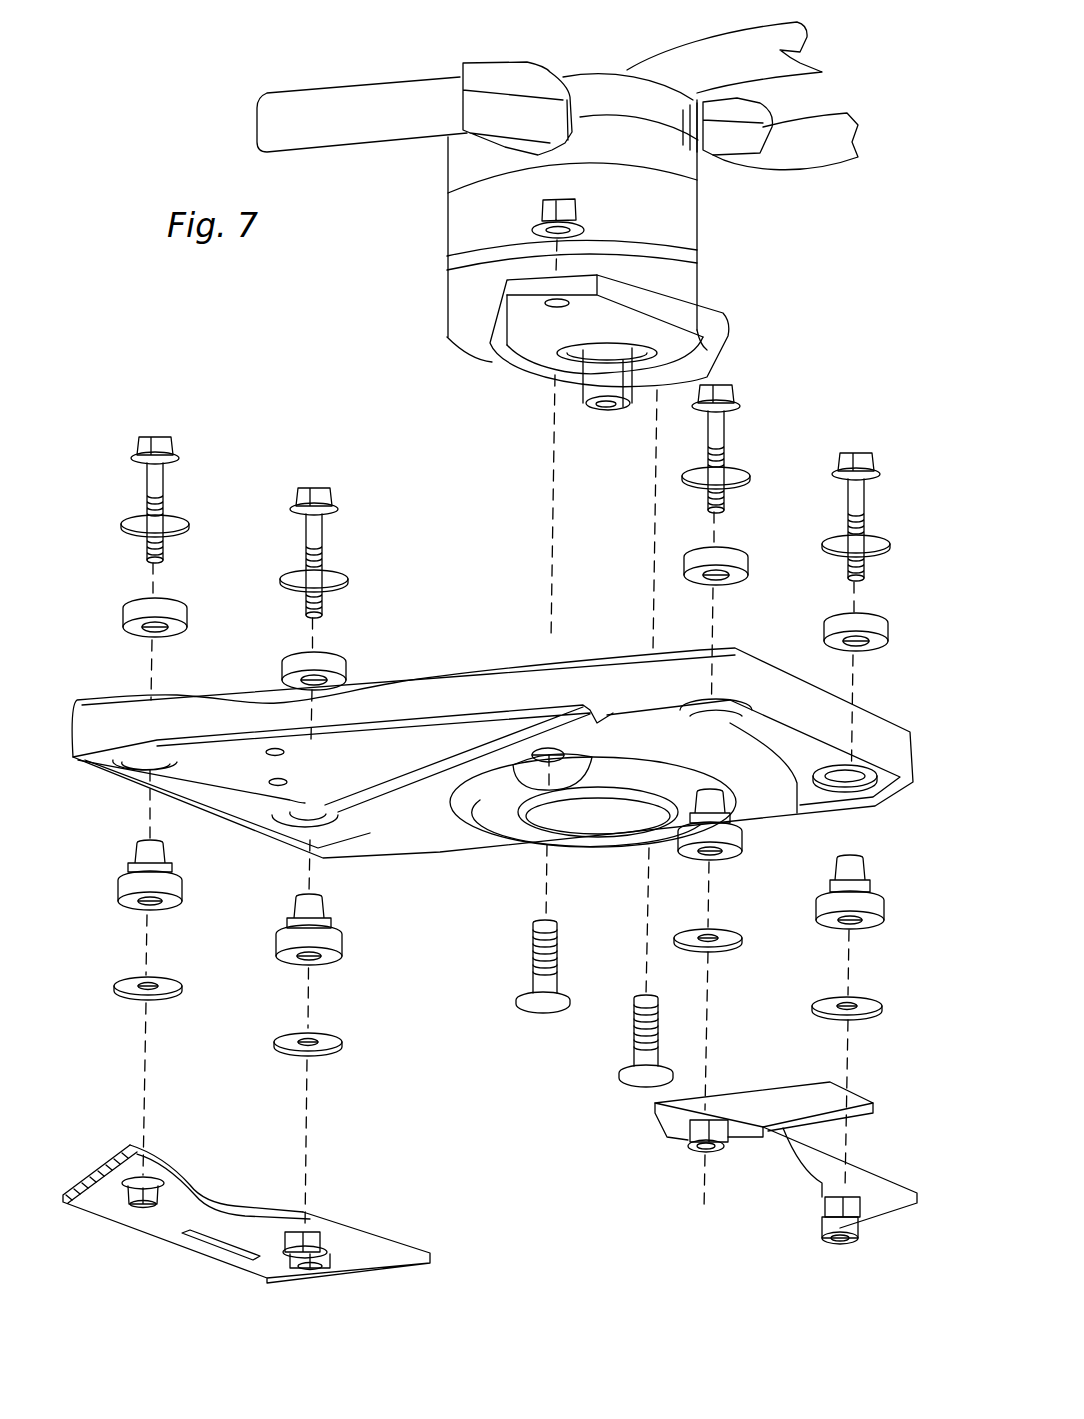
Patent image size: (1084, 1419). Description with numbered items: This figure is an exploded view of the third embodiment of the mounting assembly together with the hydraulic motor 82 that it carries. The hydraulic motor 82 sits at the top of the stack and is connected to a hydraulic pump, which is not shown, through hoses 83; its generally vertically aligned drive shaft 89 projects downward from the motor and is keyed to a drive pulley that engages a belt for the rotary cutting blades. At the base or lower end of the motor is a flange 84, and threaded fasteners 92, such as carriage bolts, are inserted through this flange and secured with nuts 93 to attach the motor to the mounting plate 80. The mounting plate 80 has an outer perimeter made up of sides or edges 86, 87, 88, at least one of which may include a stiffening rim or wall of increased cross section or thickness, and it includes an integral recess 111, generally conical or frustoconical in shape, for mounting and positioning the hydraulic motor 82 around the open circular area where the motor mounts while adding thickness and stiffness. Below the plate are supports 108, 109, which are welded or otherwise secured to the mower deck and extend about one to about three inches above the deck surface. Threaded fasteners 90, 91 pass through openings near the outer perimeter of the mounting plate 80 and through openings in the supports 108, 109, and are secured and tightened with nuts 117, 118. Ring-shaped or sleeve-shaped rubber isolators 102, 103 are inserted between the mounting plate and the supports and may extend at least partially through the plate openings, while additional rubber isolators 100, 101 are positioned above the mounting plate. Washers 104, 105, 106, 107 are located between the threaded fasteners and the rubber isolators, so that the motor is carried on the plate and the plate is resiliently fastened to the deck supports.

The mounting plate 80 is at (455, 634).
The hydraulic motor 82 is at (597, 90).
The hoses 83 is at (354, 128).
The flange 84 is at (520, 313).
The side or edge 86 is at (877, 737).
The side or edge 87 is at (490, 690).
The side or edge 88 is at (200, 805).
The drive shaft 89 is at (603, 392).
The threaded fastener 90 is at (730, 392).
The threaded fastener 91 is at (303, 497).
The threaded fasteners 92 is at (625, 1085).
The nuts 93 is at (568, 213).
The rubber isolator 100 is at (826, 633).
The rubber isolator 101 is at (285, 668).
The rubber isolator 102 is at (815, 898).
The rubber isolator 103 is at (280, 942).
The washer 104 is at (826, 545).
The washer 105 is at (286, 580).
The washer 106 is at (815, 1000).
The washer 107 is at (275, 1043).
The support 108 is at (747, 1132).
The support 109 is at (108, 1192).
The recess 111 is at (483, 795).
The nut 117 is at (297, 1237).
The nut 118 is at (827, 1203).